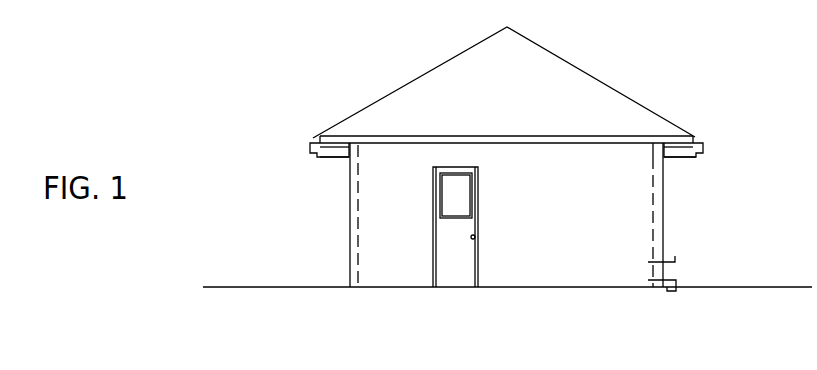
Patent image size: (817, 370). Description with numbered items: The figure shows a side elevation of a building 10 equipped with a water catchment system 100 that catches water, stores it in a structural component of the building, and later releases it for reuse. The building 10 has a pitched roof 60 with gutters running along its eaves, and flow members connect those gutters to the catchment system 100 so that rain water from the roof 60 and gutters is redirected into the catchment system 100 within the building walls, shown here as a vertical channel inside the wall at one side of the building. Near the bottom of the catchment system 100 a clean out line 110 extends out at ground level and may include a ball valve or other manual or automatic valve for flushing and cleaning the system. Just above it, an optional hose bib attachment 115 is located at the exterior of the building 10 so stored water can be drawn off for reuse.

The building 10 is at (336, 220).
The roof 60 is at (569, 63).
The catchment system 100 is at (656, 226).
The hose bib attachment 115 is at (676, 258).
The clean out line 110 is at (678, 291).